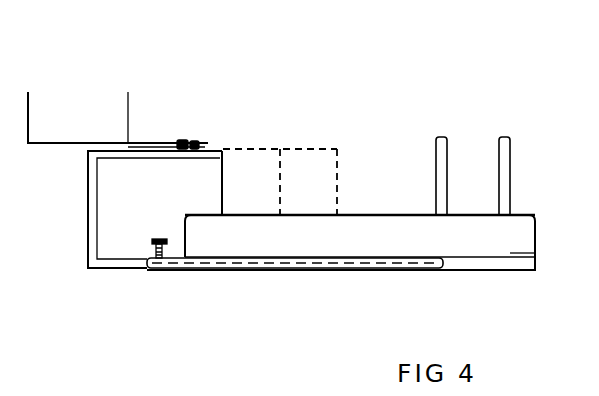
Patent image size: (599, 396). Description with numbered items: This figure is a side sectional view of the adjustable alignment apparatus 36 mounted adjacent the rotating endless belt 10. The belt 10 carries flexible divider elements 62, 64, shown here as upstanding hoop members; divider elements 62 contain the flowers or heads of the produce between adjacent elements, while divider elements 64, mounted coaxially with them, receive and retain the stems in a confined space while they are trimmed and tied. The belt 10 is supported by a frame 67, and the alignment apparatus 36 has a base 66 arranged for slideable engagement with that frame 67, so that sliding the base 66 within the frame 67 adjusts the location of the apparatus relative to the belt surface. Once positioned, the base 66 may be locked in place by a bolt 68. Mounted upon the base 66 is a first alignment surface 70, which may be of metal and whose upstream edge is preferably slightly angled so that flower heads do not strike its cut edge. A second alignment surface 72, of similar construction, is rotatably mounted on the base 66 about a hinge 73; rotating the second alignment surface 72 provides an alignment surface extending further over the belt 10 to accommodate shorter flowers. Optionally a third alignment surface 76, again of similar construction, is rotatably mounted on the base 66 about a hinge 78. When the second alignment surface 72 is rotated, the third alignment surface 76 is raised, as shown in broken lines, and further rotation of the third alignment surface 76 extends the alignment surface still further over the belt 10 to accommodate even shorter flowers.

The endless belt 10 is at (385, 214).
The alignment apparatus 36 is at (290, 127).
The divider elements 62 is at (441, 137).
The divider elements 64 is at (500, 137).
The base 66 is at (115, 158).
The frame 67 is at (281, 266).
The bolt 68 is at (151, 239).
The first alignment surface 70 is at (223, 186).
The second alignment surface 72 is at (130, 111).
The hinge 73 is at (200, 140).
The third alignment surface 76 is at (30, 111).
The hinge 78 is at (188, 139).